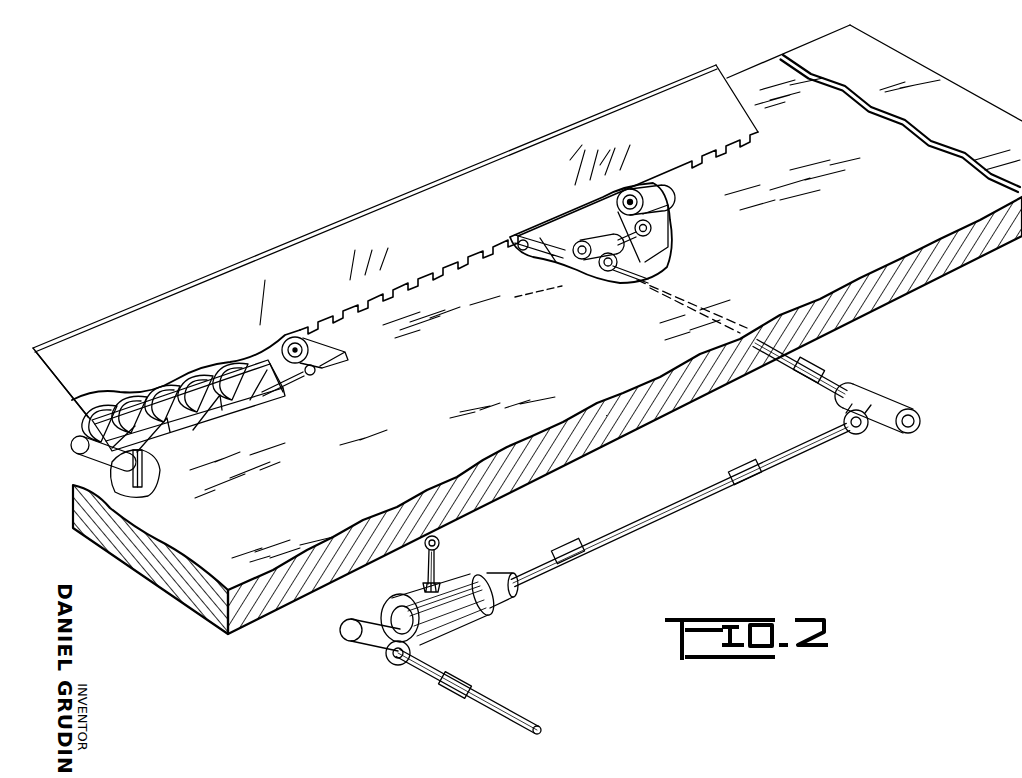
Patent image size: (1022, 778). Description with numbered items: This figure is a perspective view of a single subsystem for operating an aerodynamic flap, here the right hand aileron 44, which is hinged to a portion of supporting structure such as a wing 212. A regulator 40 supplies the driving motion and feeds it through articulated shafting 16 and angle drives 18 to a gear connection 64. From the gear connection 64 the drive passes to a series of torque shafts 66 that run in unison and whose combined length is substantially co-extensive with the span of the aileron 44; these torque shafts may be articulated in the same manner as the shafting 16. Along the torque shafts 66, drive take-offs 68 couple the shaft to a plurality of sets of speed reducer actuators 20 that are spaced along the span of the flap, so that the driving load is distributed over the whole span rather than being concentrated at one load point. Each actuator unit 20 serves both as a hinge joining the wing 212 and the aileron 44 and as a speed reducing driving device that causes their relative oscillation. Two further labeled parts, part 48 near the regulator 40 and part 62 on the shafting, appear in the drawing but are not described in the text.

The shafting 16 is at (793, 352).
The angle drives 18 is at (877, 393).
The speed reducer actuators 20 is at (162, 392).
The regulator 40 is at (465, 630).
The aileron 44 is at (395, 242).
The control knob 48 is at (440, 541).
The coupling cap 62 is at (502, 598).
The gear connection 64 is at (597, 242).
The torque shafts 66 is at (667, 263).
The drive take-offs 68 is at (122, 493).
The supporting structure 212 is at (433, 355).